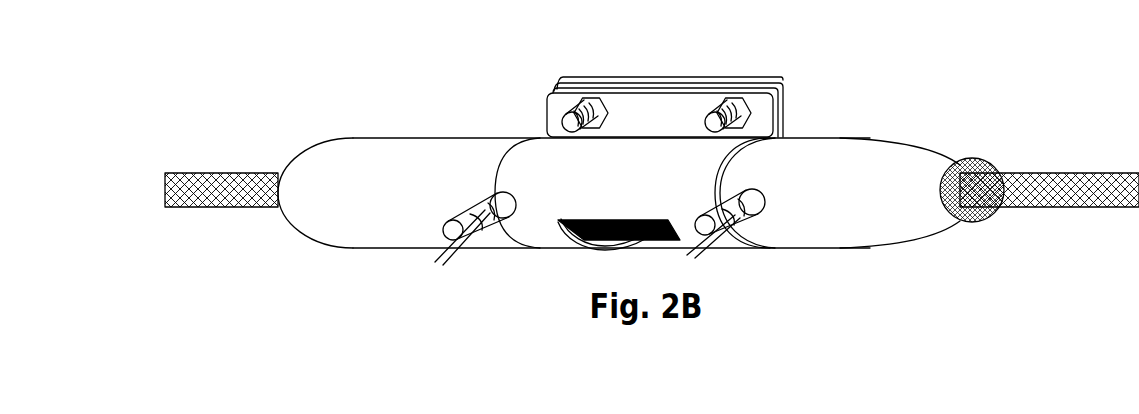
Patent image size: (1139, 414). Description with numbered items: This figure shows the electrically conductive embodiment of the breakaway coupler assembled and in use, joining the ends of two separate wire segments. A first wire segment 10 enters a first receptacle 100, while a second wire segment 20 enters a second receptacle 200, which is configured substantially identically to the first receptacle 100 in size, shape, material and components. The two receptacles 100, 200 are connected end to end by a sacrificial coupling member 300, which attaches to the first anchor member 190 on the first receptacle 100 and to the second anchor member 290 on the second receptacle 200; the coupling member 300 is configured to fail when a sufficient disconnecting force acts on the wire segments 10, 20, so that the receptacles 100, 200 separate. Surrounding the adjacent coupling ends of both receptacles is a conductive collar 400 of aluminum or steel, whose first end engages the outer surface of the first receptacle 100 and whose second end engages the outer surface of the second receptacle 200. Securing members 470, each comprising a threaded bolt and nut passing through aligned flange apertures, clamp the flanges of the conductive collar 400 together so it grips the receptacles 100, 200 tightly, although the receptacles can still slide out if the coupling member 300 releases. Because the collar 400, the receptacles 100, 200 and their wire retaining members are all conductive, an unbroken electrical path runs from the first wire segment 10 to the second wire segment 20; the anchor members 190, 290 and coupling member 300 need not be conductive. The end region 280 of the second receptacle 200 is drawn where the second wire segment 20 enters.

The first wire segment 10 is at (220, 178).
The second wire segment 20 is at (1040, 175).
The first receptacle 100 is at (420, 178).
The second receptacle 200 is at (823, 165).
The conductive collar 400 is at (540, 140).
The securing member 470 is at (572, 97).
The first anchor member 190 is at (445, 240).
The second anchor member 290 is at (740, 233).
The end cap 280 is at (970, 160).
The coupling member 300 is at (582, 247).